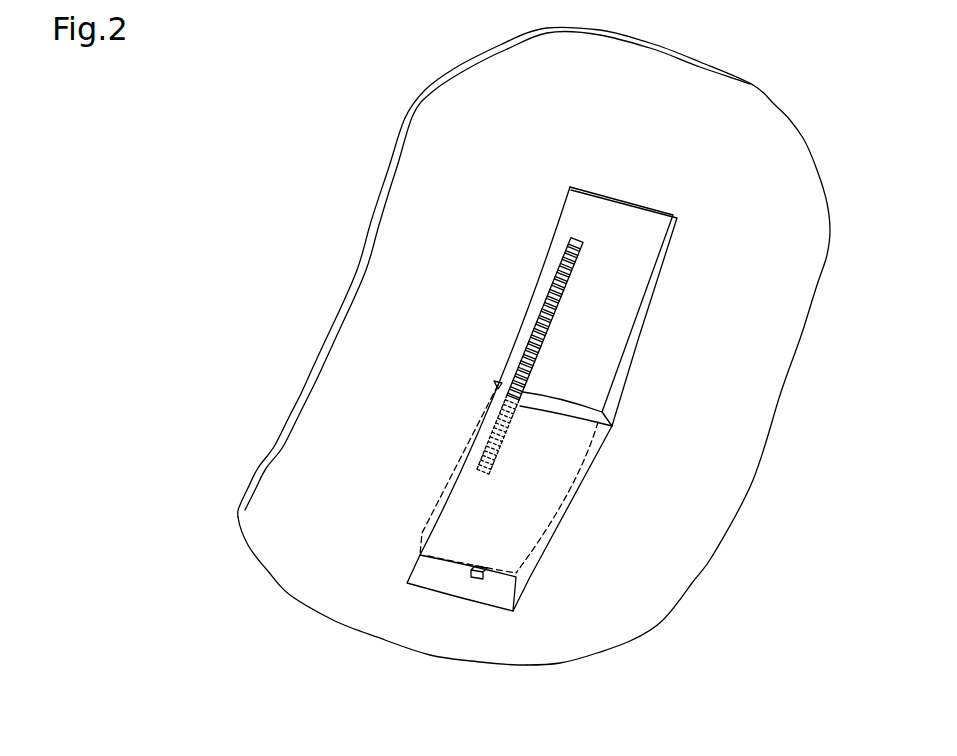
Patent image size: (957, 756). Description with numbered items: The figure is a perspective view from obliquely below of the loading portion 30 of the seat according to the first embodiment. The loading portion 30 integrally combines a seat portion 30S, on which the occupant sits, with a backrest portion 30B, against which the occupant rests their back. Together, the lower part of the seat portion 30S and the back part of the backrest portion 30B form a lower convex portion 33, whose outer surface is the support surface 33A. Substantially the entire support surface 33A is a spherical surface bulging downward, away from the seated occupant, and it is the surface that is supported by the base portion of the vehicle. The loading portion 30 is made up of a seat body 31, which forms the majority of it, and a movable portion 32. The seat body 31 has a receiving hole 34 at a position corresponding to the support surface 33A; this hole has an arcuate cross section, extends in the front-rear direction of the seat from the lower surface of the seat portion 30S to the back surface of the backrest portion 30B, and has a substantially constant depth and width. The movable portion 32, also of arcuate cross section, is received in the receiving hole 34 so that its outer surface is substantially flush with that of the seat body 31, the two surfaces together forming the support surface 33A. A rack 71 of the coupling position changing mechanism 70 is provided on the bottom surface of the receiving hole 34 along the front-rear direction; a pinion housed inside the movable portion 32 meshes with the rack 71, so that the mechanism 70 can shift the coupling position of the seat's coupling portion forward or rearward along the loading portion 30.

The loading portion 30 is at (804, 139).
The backrest portion 30B is at (785, 328).
The seat portion 30S is at (628, 602).
The seat body 31 is at (297, 557).
The support surface 33A is at (372, 342).
The lower convex portion 33 is at (321, 317).
The receiving hole 34 is at (622, 288).
The movable portion 32 is at (485, 498).
The rack 71 is at (557, 284).
The coupling position changing mechanism 70 is at (514, 356).